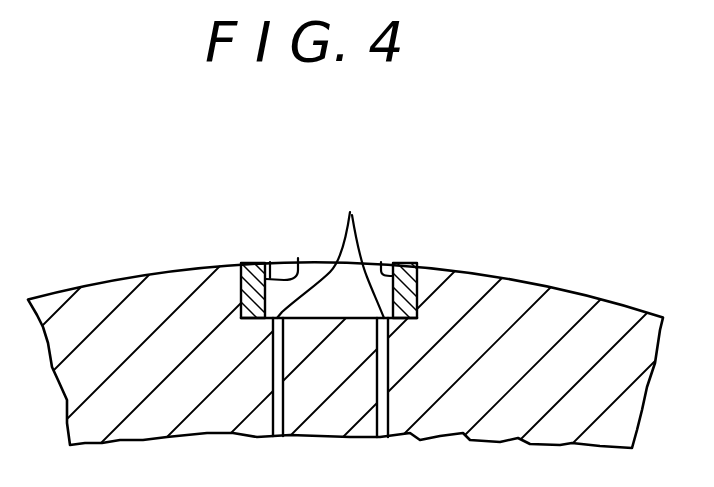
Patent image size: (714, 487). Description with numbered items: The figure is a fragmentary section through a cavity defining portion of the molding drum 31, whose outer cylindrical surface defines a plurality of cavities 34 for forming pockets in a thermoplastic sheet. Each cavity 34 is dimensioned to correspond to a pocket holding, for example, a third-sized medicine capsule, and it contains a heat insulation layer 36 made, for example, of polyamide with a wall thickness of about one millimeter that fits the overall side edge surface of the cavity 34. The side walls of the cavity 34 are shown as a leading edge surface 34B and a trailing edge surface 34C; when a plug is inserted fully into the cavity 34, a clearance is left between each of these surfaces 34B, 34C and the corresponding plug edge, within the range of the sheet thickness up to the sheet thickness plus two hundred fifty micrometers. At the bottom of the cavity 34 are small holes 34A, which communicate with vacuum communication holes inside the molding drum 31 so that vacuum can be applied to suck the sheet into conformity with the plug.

The molding drum 31 is at (565, 300).
The cavity 34 is at (298, 258).
The small holes 34A is at (330, 246).
The leading edge surface of the cavity 34B is at (381, 262).
The trailing edge surface of the cavity 34C is at (270, 262).
The heat insulation layer 36 is at (255, 263).